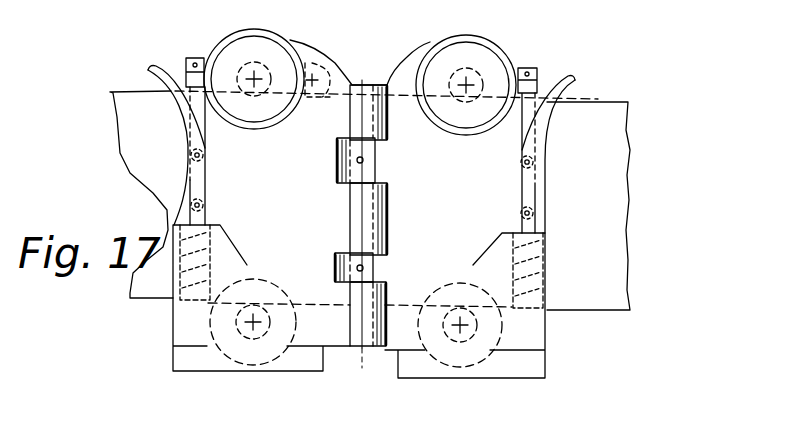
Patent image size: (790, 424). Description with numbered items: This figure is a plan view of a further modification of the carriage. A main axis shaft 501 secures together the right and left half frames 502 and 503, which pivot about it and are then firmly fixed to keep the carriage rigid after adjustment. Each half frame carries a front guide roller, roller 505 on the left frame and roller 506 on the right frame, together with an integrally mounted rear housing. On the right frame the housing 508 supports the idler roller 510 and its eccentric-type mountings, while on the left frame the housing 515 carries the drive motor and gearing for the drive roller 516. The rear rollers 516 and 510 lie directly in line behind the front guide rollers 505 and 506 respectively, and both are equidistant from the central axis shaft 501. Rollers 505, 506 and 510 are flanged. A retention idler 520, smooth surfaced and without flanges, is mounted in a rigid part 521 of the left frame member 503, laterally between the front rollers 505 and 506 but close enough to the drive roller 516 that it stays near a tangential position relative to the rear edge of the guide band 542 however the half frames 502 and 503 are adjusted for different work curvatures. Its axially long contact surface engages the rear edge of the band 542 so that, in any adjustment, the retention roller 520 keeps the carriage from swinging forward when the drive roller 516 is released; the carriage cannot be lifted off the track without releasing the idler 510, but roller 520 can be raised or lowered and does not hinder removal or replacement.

The main axis shaft 501 is at (386, 222).
The right half frame 502 is at (541, 178).
The left half frame 503 is at (183, 173).
The front guide roller 505 is at (284, 325).
The front guide roller 506 is at (478, 332).
The housing 508 is at (440, 128).
The idler roller 510 is at (451, 100).
The housing 515 is at (242, 131).
The drive roller 516 is at (236, 95).
The retention idler 520 is at (317, 100).
The rigid part 521 is at (327, 50).
The guide band 542 is at (605, 102).